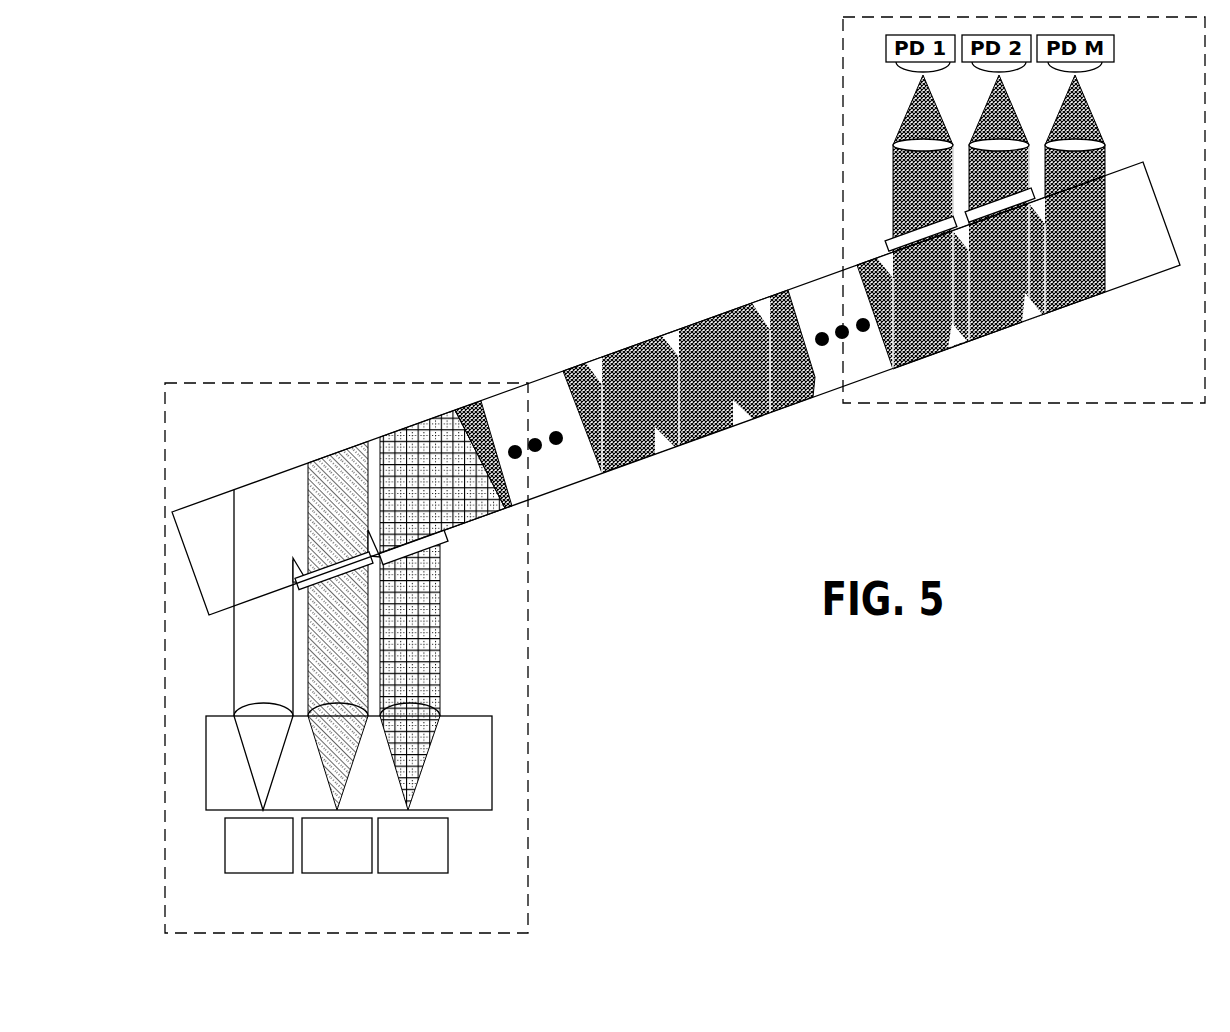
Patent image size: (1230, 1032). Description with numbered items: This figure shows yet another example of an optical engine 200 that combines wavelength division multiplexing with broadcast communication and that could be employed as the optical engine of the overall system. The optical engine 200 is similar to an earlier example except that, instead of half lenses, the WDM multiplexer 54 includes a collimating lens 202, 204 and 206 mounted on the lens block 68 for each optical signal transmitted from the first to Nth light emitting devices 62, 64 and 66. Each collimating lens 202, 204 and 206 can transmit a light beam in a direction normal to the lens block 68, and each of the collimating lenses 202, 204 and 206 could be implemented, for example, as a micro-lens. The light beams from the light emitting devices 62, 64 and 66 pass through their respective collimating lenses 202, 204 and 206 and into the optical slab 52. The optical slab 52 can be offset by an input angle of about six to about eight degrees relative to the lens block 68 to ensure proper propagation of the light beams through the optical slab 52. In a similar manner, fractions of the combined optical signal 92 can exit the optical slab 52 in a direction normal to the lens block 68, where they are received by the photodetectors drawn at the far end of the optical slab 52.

The optical engine 200 is at (536, 258).
The optical slab 52 is at (590, 366).
The WDM multiplexer 54 is at (243, 378).
The combined optical signal 92 is at (455, 422).
The first light emitting device 62 is at (257, 873).
The second light emitting device 64 is at (340, 873).
The Nth light emitting device 66 is at (417, 873).
The lens block 68 is at (492, 807).
The collimating lens 202 is at (250, 704).
The collimating lens 204 is at (367, 712).
The collimating lens 206 is at (428, 707).